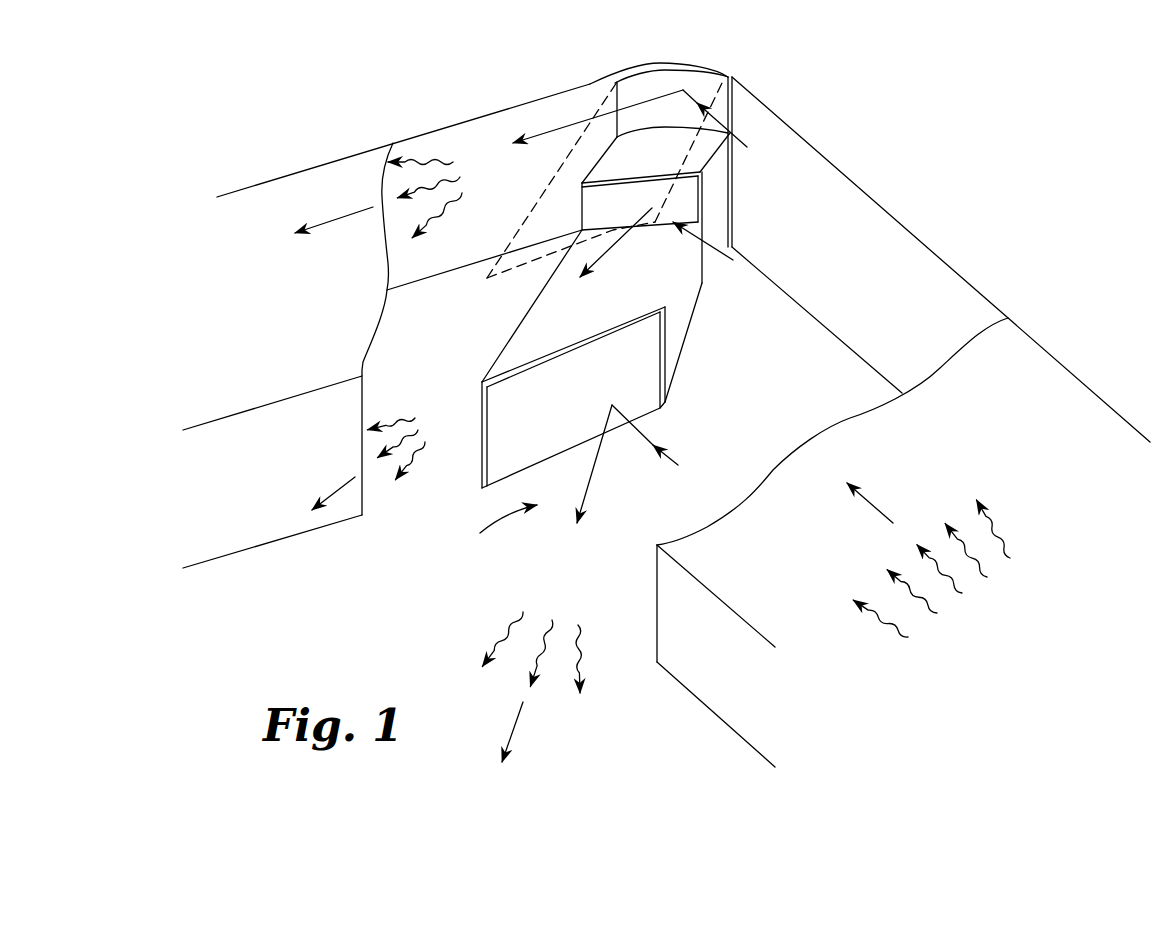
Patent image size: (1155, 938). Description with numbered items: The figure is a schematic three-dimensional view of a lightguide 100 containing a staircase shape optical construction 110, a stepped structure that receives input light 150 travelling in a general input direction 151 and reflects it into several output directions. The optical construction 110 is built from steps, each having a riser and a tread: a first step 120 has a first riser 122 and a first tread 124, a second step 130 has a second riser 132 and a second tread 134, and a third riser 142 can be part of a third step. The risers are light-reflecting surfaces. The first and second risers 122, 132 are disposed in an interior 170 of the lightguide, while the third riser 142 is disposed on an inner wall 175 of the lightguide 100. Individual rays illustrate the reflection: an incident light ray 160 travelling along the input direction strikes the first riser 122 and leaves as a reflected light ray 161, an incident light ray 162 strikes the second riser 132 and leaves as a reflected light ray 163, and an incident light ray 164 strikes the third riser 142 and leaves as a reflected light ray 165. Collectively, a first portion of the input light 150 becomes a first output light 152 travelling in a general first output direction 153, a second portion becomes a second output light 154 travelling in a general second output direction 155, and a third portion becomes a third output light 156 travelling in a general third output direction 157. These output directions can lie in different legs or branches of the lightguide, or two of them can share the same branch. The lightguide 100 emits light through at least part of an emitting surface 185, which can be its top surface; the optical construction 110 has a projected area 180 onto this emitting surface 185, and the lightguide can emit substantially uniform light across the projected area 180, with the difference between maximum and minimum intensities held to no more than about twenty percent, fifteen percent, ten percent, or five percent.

The lightguide 100 is at (937, 158).
The staircase shape optical construction 110 is at (720, 230).
The first step 120 is at (678, 351).
The first riser 122 is at (480, 453).
The first tread 124 is at (515, 367).
The second step 130 is at (720, 163).
The second riser 132 is at (688, 197).
The second tread 134 is at (608, 176).
The third riser 142 is at (638, 85).
The input light 150 is at (1000, 533).
The input direction 151 is at (880, 512).
The first output light 152 is at (552, 622).
The first output direction 153 is at (517, 723).
The second output light 154 is at (397, 422).
The second output direction 155 is at (333, 494).
The third output light 156 is at (420, 167).
The third output direction 157 is at (328, 222).
The incident light ray 160 is at (668, 452).
The reflected light ray 161 is at (588, 488).
The incident light ray 162 is at (712, 250).
The reflected light ray 163 is at (605, 253).
The incident light ray 164 is at (747, 142).
The reflected light ray 165 is at (541, 135).
The interior 170 is at (489, 528).
The inner wall 175 is at (567, 108).
The projected area 180 is at (490, 286).
The emitting surface 185 is at (870, 212).